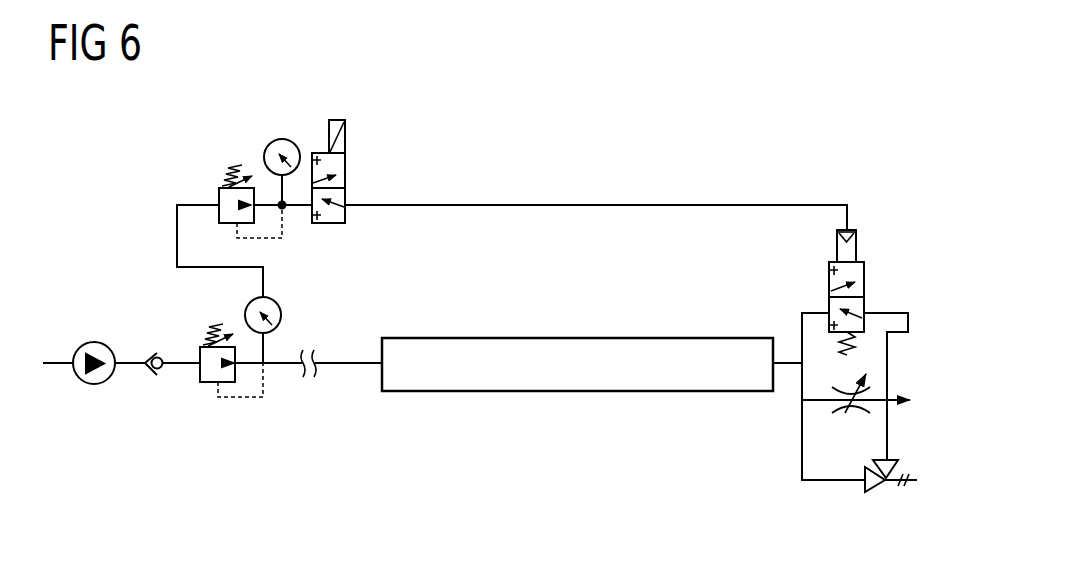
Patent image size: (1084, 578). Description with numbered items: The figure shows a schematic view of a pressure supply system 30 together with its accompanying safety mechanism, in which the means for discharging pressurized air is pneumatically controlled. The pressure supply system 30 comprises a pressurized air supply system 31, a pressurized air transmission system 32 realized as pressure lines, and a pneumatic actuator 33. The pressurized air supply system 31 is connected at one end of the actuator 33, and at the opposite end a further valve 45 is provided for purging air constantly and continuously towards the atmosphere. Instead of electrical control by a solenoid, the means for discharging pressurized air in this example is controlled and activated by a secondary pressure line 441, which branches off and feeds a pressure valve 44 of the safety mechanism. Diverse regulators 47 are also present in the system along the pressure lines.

The pressure supply system 30 is at (325, 462).
The pressurized air supply system 31 is at (93, 342).
The pressurized air transmission system 32 is at (347, 362).
The pneumatic actuator 33 is at (572, 350).
The pressure valve 44 is at (890, 291).
The secondary pressure line 441 is at (687, 203).
The valve for purging air 45 is at (849, 424).
The regulators 47 is at (230, 153).